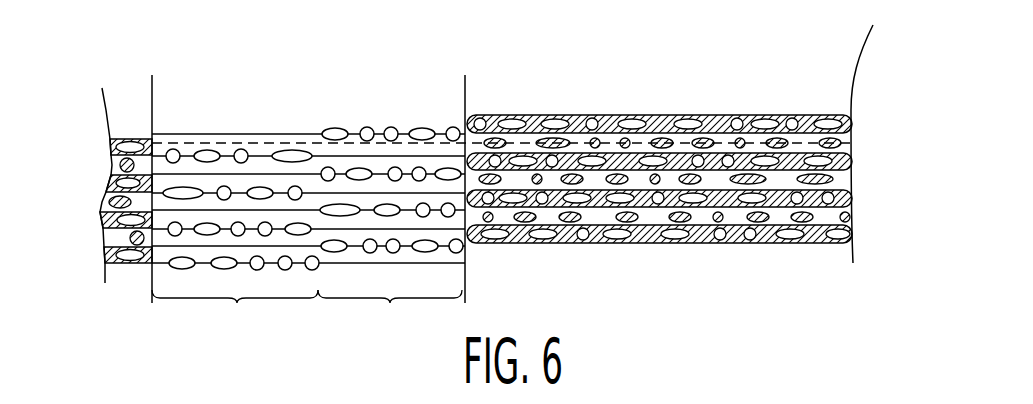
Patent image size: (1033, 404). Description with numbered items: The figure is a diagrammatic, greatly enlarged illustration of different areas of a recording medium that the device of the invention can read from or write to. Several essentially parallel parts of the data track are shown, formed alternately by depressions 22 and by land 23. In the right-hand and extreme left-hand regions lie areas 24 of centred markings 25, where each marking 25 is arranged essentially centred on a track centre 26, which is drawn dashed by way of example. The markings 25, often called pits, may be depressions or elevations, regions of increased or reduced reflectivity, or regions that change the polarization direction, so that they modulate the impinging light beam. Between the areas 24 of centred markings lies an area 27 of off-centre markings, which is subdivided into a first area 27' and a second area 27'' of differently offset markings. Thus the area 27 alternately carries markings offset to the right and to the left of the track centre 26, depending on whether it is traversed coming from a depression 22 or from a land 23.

The depressions 22 is at (110, 147).
The land 23 is at (112, 165).
The areas of centred markings 24 is at (152, 91).
The markings 25 is at (367, 128).
The track centre 26 is at (523, 142).
The area of off-centre markings 27 is at (308, 180).
The first area 27' is at (235, 314).
The second area 27'' is at (390, 314).